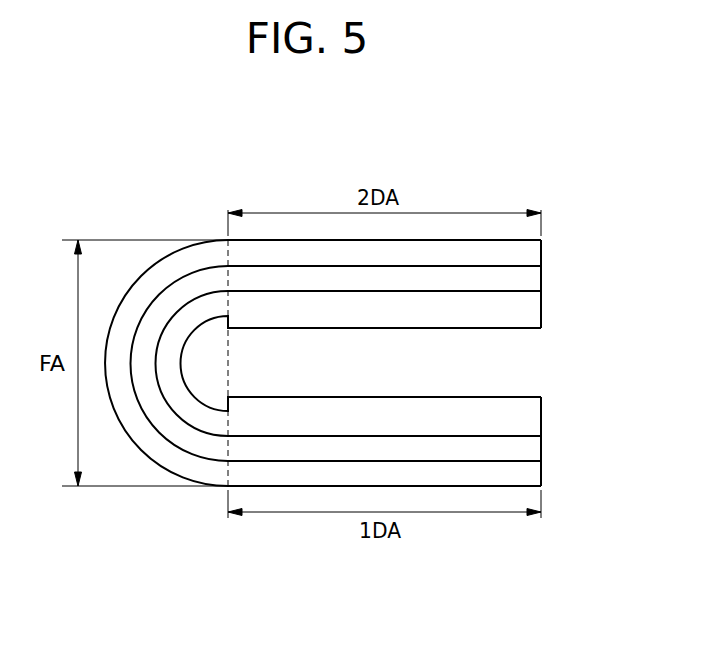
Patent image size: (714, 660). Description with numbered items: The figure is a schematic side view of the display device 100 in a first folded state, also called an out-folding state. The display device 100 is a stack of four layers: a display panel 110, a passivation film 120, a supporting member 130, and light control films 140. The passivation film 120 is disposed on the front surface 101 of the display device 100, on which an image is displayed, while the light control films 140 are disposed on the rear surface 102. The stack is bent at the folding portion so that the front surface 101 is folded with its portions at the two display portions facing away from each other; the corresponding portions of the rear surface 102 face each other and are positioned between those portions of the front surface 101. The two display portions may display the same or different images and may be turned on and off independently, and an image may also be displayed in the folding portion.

The display device 100 is at (301, 112).
The front surface 101 is at (456, 236).
The rear surface 102 is at (459, 334).
The display panel 110 is at (530, 278).
The passivation film 120 is at (530, 250).
The supporting member 130 is at (530, 306).
The light control films 140 is at (530, 322).